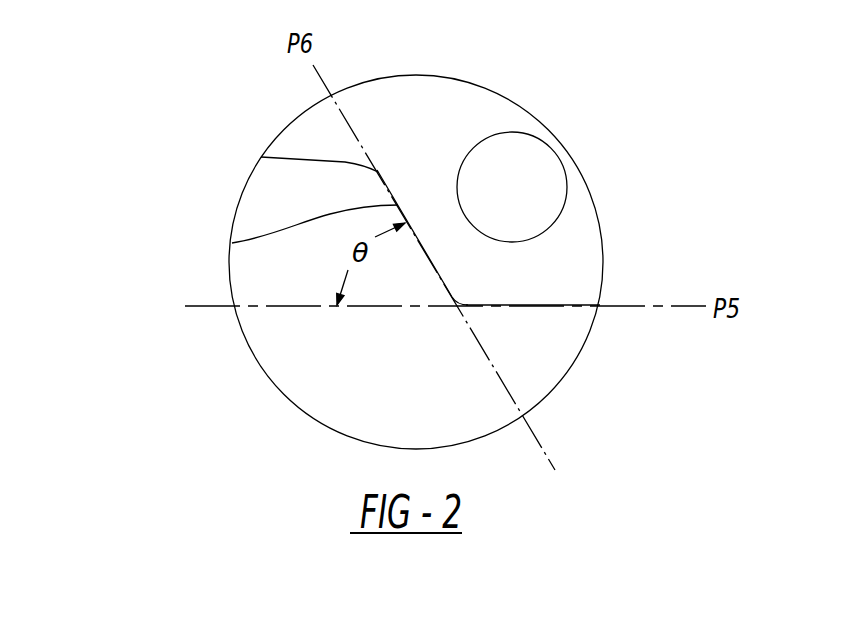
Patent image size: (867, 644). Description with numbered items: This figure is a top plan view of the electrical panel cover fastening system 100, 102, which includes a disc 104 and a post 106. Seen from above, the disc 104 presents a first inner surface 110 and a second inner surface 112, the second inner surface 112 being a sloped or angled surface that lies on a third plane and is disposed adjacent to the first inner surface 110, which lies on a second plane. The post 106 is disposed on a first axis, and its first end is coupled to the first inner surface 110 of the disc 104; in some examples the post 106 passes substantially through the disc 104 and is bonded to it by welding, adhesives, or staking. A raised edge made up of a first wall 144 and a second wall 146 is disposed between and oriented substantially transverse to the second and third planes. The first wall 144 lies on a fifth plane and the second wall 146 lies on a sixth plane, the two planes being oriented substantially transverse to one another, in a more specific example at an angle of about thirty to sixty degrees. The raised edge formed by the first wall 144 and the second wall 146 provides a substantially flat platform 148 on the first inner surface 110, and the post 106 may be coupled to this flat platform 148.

The electrical panel cover fastening system 100 is at (328, 247).
The electrical panel cover fastening system 102 is at (145, 138).
The disc 104 is at (237, 202).
The post 106 is at (568, 181).
The first inner surface 110 is at (408, 107).
The second inner surface 112 is at (400, 367).
The first wall 144 is at (535, 307).
The second wall 146 is at (232, 243).
The substantially flat platform 148 is at (533, 272).